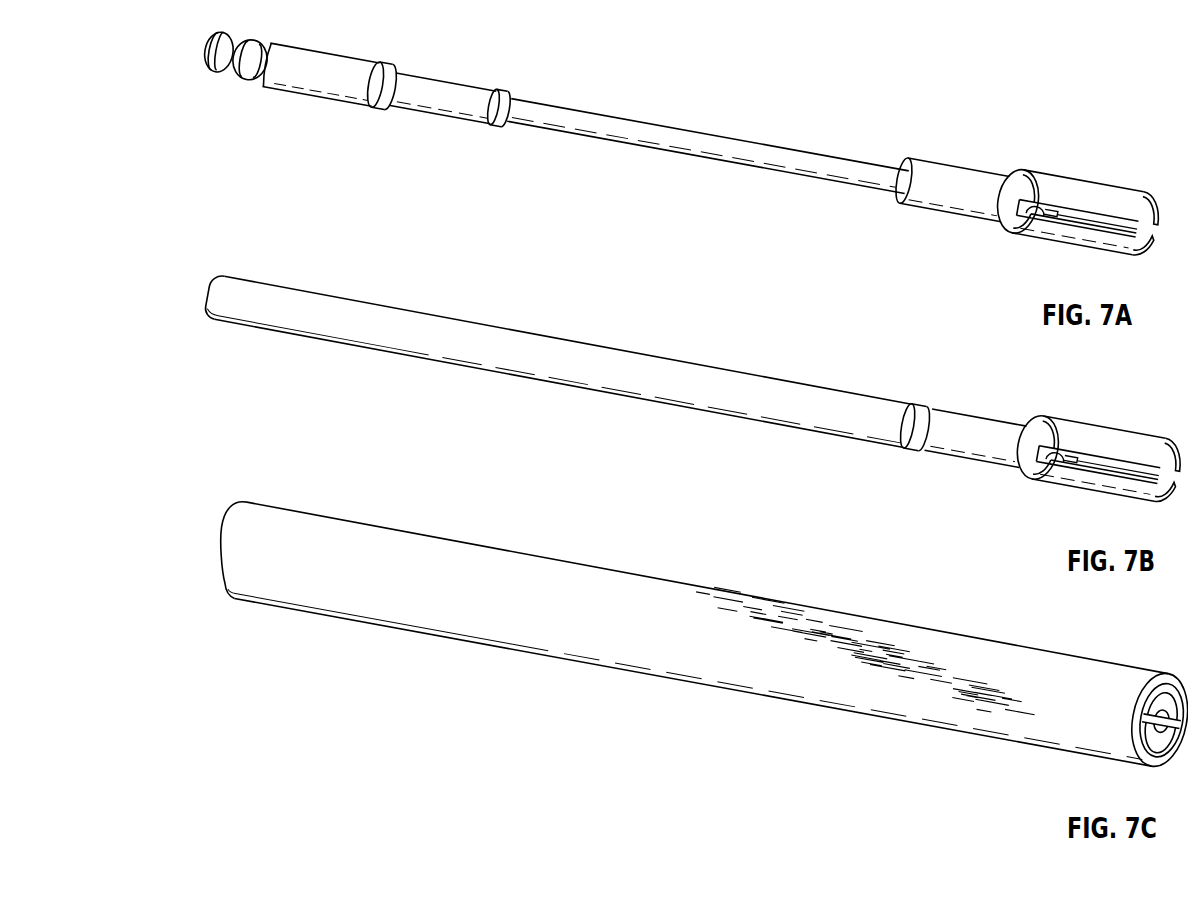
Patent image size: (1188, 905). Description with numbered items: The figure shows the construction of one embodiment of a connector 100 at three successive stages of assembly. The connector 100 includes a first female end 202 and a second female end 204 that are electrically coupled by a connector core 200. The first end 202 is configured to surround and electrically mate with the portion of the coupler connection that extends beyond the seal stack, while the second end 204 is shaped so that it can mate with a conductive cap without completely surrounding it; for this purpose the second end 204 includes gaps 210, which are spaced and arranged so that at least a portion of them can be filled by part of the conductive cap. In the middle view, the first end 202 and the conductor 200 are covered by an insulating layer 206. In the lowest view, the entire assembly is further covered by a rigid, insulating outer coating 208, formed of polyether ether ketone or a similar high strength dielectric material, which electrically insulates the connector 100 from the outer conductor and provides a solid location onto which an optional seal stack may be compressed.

In FIG. 7A, the connector 100 is at (186, 54).
In FIG. 7B, the connector 100 is at (186, 303).
In FIG. 7C, the connector 100 is at (186, 567).
In FIG. 7A, the connector core 200 is at (643, 130).
In FIG. 7A, the first female end 202 is at (306, 78).
In FIG. 7A, the second female end 204 is at (1042, 182).
In FIG. 7B, the insulating layer 206 is at (277, 315).
In FIG. 7C, the outer coating 208 is at (624, 586).
In FIG. 7A, the gaps 210 is at (1030, 222).
In FIG. 7B, the gaps 210 is at (1047, 467).